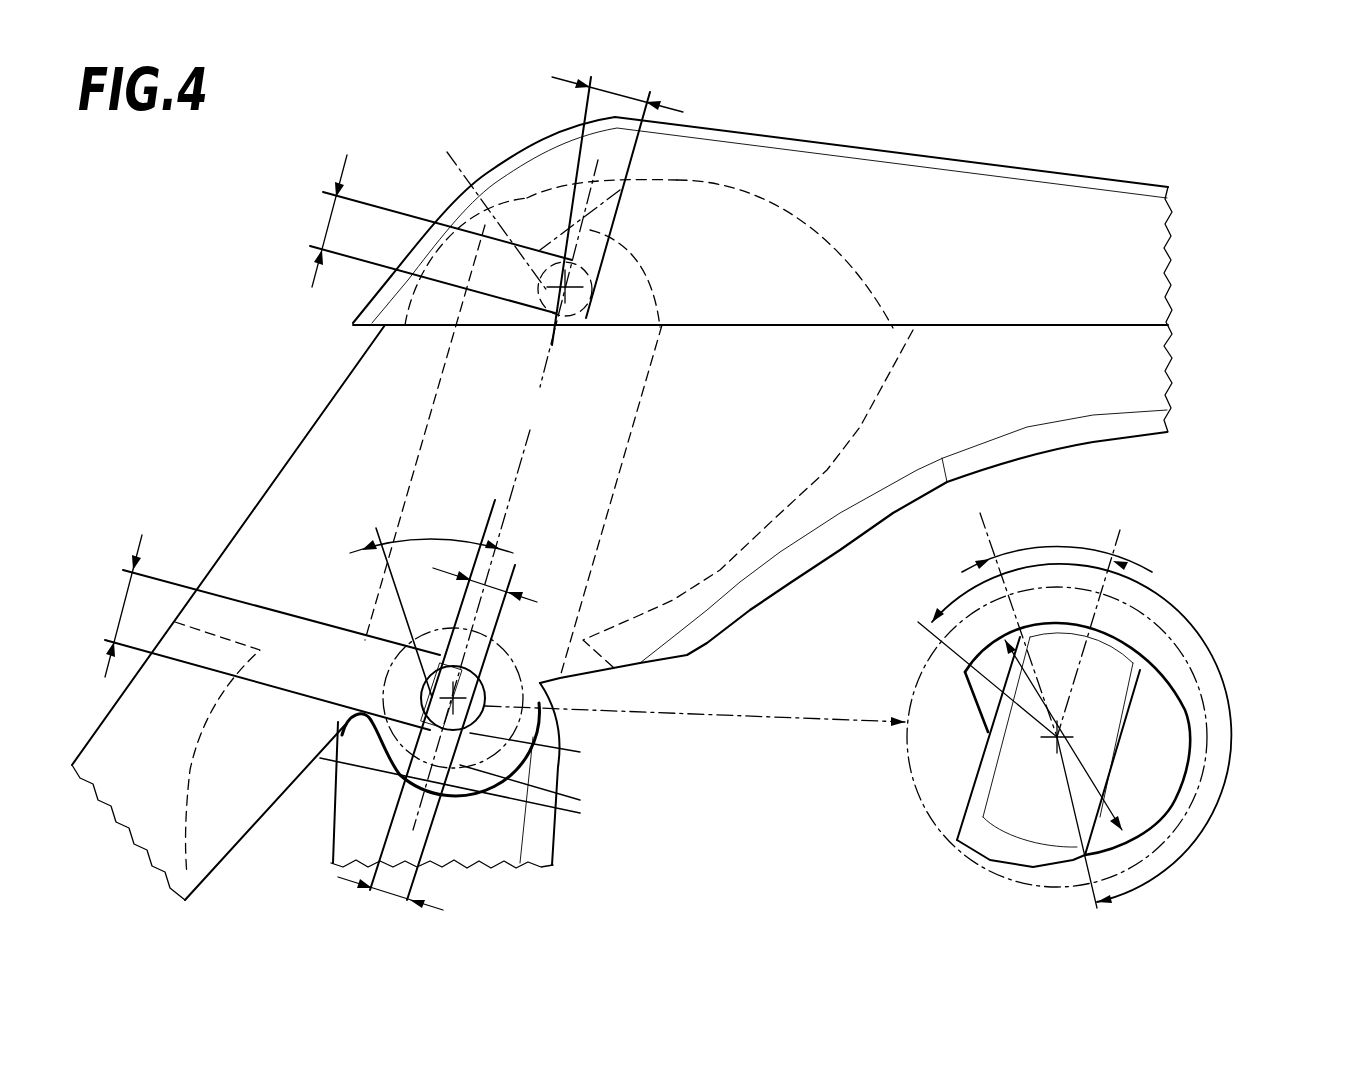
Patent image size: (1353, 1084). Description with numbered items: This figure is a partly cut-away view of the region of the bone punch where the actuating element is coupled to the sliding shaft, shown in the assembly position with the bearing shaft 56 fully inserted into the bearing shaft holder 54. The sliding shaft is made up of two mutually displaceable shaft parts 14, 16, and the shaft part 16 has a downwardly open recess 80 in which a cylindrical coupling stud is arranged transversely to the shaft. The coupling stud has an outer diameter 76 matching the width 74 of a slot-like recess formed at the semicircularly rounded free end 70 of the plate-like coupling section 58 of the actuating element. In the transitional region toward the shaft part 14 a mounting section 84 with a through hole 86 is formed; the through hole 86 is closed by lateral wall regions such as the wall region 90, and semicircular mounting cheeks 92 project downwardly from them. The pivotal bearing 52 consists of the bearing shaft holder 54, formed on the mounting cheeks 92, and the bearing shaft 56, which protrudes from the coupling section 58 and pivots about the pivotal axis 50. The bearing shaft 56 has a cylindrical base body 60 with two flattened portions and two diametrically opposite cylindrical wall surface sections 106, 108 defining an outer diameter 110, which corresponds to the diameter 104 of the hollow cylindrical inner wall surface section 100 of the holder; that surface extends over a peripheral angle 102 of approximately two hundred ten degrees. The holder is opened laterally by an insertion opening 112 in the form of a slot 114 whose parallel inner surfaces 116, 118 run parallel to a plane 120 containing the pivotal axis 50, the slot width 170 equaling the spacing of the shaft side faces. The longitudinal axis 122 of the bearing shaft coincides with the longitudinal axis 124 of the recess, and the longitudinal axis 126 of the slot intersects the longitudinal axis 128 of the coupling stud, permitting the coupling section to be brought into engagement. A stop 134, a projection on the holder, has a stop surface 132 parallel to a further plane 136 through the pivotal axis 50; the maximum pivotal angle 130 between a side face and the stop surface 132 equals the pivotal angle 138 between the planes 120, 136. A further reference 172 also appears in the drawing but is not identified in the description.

The shaft part 14 is at (1150, 450).
The shaft part 16 is at (1080, 168).
The pivotal axis 50 is at (425, 680).
The pivotal bearing 52 is at (520, 690).
The bearing shaft holder 54 is at (1200, 727).
The bearing shaft 56 is at (1033, 830).
The coupling section 58 is at (583, 430).
The cylindrical base body 60 is at (943, 810).
The free end 70 is at (553, 197).
The width 74 is at (650, 98).
The outer diameter 76 is at (330, 222).
The recess 80 is at (880, 288).
The mounting section 84 is at (397, 375).
The through hole 86 is at (885, 395).
The lateral wall region 90 is at (372, 428).
The mounting cheek 92 is at (520, 718).
The hollow cylindrical inner wall surface section 100 is at (1190, 655).
The peripheral angle 102 is at (1195, 690).
The diameter 104 is at (1175, 830).
The cylindrical wall surface section 106 is at (1140, 610).
The cylindrical wall surface section 108 is at (1010, 850).
The outer diameter 110 is at (123, 607).
The insertion opening 112 is at (340, 748).
The slot 114 is at (520, 763).
The inner surface 116 is at (345, 718).
The inner surface 118 is at (520, 800).
The plane 120 is at (440, 790).
The longitudinal axis 122 is at (517, 485).
The longitudinal axis 124 is at (548, 364).
The longitudinal axis 126 is at (620, 190).
The longitudinal axis 128 is at (471, 213).
The maximum pivotal angle 130 is at (432, 533).
The stop surface 132 is at (937, 687).
The stop 134 is at (950, 745).
The further plane 136 is at (988, 540).
The pivotal angle 138 is at (1055, 547).
The width 170 is at (388, 897).
The bore wall thickness 172 is at (490, 586).